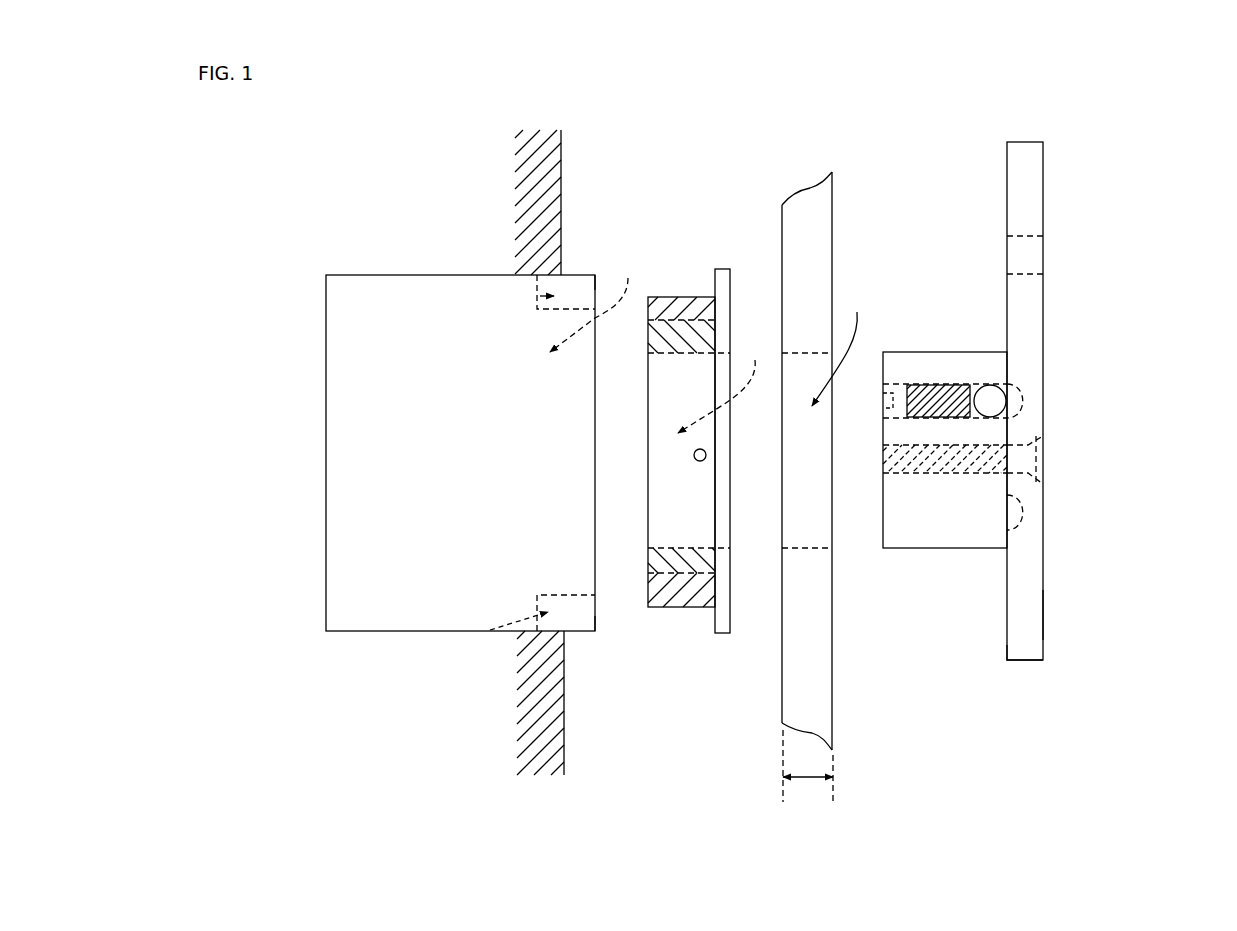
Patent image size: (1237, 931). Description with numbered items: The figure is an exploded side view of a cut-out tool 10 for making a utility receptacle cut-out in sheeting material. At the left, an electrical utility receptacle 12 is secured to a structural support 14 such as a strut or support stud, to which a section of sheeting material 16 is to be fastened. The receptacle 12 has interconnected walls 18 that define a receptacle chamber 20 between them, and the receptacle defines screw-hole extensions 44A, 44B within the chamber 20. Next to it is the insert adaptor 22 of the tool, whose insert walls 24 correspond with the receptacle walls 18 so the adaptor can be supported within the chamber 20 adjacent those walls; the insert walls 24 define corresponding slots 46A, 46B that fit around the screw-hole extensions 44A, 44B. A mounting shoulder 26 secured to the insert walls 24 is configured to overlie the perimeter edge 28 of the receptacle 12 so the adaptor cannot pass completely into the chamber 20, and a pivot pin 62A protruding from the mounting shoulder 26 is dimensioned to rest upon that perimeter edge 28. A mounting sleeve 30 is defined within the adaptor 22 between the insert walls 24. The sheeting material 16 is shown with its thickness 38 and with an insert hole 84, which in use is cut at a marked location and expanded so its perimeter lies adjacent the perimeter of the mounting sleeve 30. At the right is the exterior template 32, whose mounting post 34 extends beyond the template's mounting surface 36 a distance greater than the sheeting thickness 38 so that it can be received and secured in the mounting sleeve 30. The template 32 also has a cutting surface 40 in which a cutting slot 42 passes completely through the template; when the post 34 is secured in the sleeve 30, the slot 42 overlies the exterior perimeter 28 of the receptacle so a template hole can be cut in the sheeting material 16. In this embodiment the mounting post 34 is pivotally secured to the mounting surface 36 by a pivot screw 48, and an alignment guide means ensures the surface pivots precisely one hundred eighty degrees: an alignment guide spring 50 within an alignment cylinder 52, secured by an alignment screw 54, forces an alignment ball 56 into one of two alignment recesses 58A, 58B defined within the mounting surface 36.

The cut-out tool 10 is at (1162, 152).
The electrical utility receptacle 12 is at (382, 307).
The structural support 14 is at (553, 190).
The sheeting material 16 is at (817, 218).
The interconnected walls 18 is at (432, 632).
The receptacle chamber 20 is at (593, 304).
The insert adaptor 22 is at (682, 297).
The insert walls 24 is at (697, 607).
The mounting shoulder 26 is at (717, 269).
The perimeter edge 28 is at (598, 275).
The mounting sleeve 30 is at (721, 385).
The exterior template 32 is at (1020, 158).
The mounting post 34 is at (957, 352).
The mounting surface 36 is at (1008, 635).
The thickness 38 is at (807, 777).
The cutting surface 40 is at (1044, 613).
The cutting slot 42 is at (1027, 257).
The screw-hole extension 44A is at (540, 296).
The screw-hole extension 44B is at (473, 633).
The slot 46A is at (662, 306).
The slot 46B is at (666, 594).
The pivot screw 48 is at (1040, 462).
The alignment guide spring 50 is at (960, 385).
The alignment cylinder 52 is at (883, 385).
The alignment screw 54 is at (882, 420).
The alignment ball 56 is at (993, 401).
The alignment recess 58A is at (1022, 404).
The alignment recess 58B is at (1022, 518).
The pivot pin 62A is at (694, 461).
The insert hole 84 is at (839, 348).